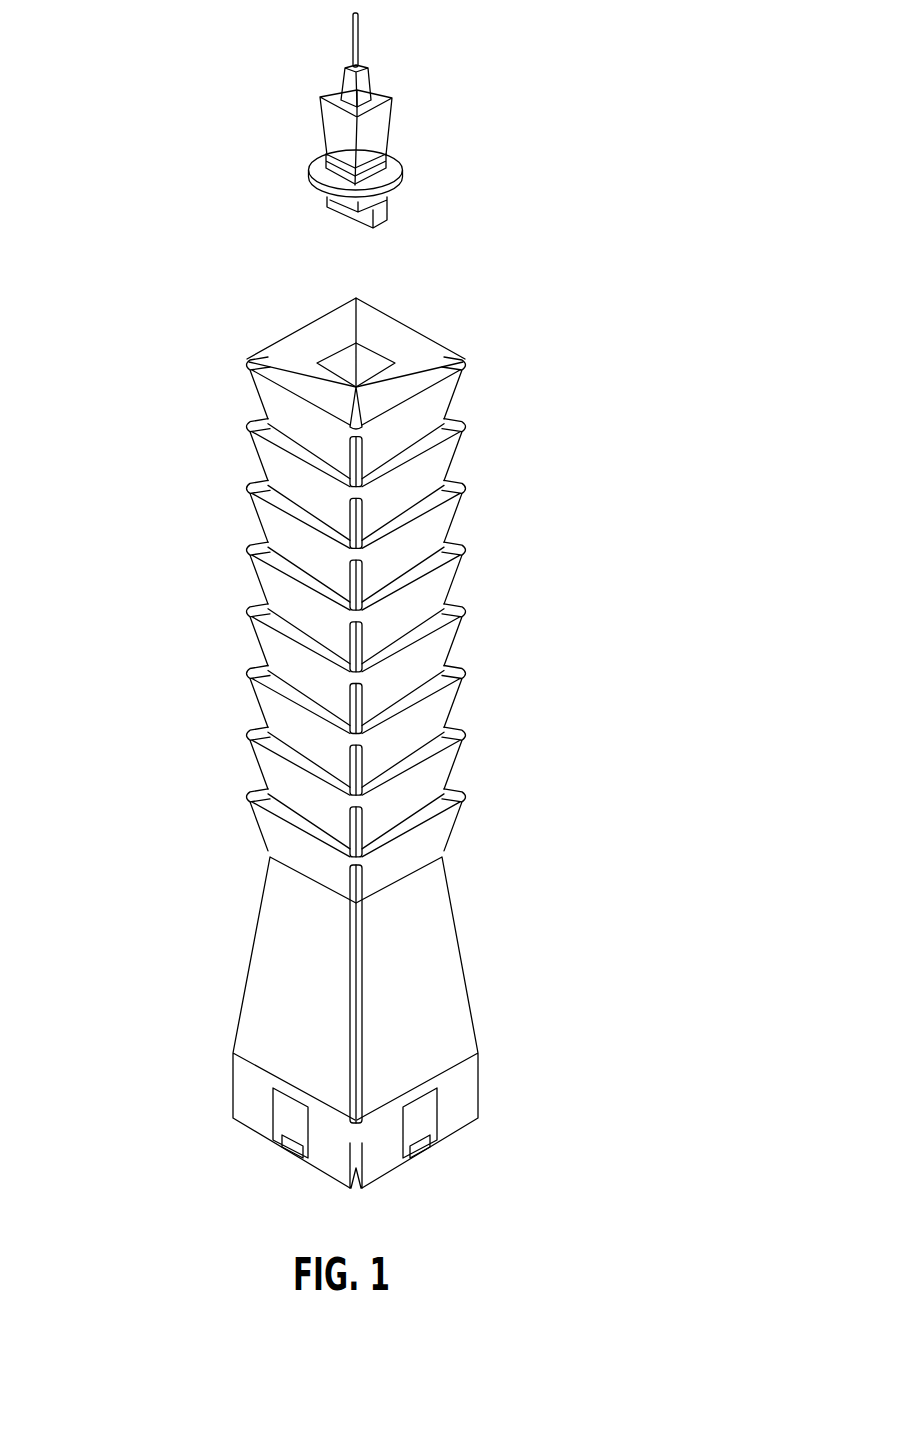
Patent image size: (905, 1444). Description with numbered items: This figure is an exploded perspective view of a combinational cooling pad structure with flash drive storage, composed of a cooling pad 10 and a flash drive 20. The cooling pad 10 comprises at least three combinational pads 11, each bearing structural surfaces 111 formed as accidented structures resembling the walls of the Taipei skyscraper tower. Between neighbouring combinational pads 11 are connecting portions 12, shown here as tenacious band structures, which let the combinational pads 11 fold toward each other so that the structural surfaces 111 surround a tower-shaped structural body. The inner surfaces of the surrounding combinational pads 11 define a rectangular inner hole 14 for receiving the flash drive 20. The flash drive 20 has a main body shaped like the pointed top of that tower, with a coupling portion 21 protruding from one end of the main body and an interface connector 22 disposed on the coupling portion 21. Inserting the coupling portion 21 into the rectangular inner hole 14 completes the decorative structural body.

The cooling pad 10 is at (135, 245).
The combinational pad 11 is at (303, 387).
The structural surface 111 is at (310, 425).
The connecting portion 12 is at (357, 613).
The rectangular inner hole 14 is at (344, 360).
The flash drive 20 is at (375, 142).
The coupling portion 21 is at (400, 202).
The interface connector 22 is at (380, 220).